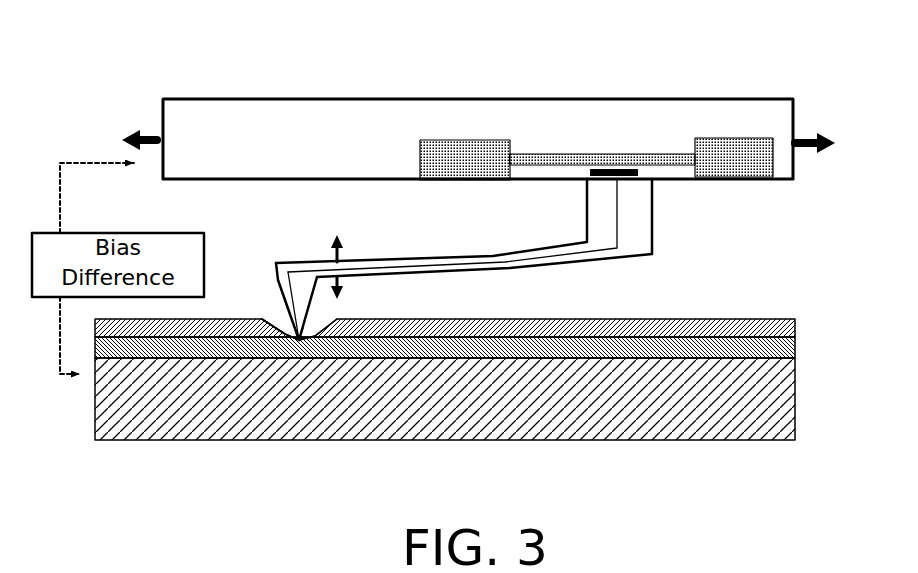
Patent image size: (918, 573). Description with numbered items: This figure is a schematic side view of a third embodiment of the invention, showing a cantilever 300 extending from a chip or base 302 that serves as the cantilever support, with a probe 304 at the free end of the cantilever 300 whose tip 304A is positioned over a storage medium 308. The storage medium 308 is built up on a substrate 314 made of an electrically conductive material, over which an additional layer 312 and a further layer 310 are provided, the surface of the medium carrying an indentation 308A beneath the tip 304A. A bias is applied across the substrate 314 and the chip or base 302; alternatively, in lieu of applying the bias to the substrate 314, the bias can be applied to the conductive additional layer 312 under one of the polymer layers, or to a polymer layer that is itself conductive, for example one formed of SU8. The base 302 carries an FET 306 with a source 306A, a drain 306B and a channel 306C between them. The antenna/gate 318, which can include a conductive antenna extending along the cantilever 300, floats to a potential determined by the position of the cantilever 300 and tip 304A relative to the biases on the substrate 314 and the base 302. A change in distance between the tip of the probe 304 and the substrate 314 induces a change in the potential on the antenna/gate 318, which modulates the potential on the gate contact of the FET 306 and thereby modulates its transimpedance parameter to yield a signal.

The cantilever 300 is at (450, 259).
The chip or base 302 is at (348, 112).
The probe 304 is at (336, 268).
The tip apex 304A is at (303, 335).
The FET 306 is at (575, 94).
The source 306A is at (478, 142).
The drain 306B is at (755, 145).
The channel 306C is at (633, 157).
The sample / recording medium 308 is at (459, 342).
The indentation in medium surface 308A is at (277, 320).
The top layer of medium 310 is at (572, 322).
The additional layer 312 is at (600, 347).
The substrate 314 is at (643, 423).
The antenna/gate 318 is at (640, 177).